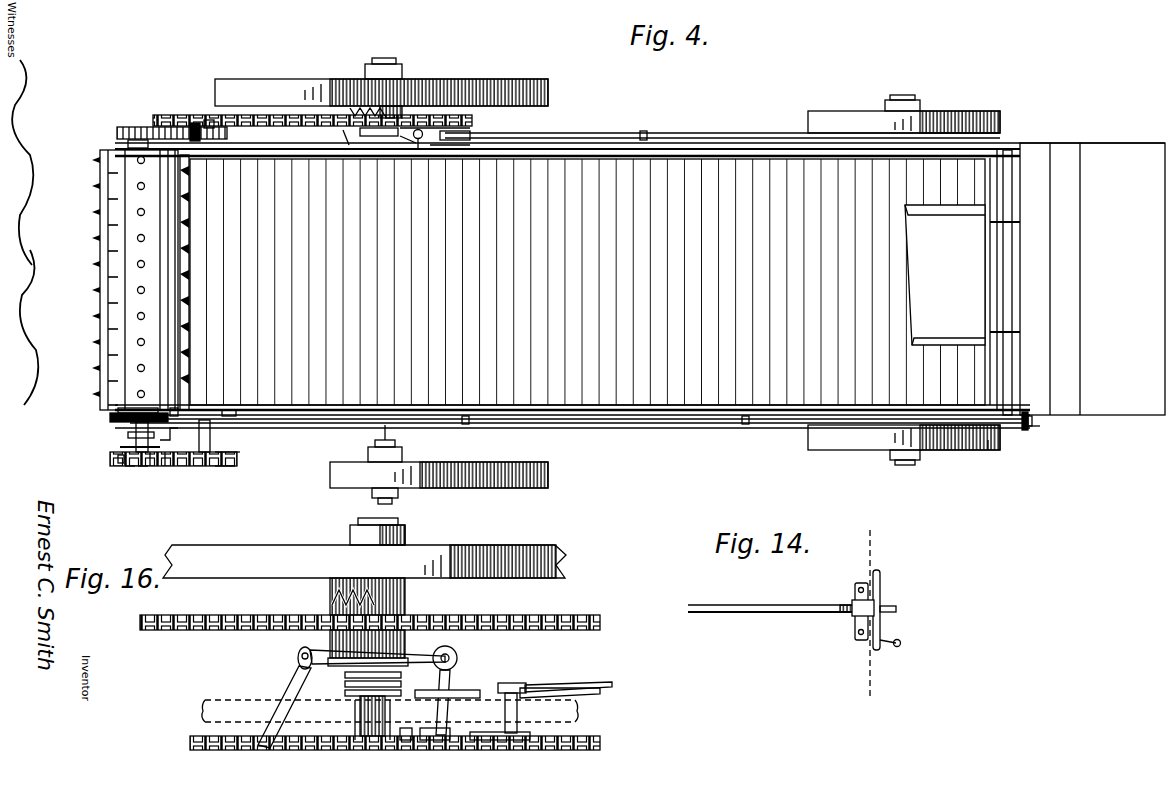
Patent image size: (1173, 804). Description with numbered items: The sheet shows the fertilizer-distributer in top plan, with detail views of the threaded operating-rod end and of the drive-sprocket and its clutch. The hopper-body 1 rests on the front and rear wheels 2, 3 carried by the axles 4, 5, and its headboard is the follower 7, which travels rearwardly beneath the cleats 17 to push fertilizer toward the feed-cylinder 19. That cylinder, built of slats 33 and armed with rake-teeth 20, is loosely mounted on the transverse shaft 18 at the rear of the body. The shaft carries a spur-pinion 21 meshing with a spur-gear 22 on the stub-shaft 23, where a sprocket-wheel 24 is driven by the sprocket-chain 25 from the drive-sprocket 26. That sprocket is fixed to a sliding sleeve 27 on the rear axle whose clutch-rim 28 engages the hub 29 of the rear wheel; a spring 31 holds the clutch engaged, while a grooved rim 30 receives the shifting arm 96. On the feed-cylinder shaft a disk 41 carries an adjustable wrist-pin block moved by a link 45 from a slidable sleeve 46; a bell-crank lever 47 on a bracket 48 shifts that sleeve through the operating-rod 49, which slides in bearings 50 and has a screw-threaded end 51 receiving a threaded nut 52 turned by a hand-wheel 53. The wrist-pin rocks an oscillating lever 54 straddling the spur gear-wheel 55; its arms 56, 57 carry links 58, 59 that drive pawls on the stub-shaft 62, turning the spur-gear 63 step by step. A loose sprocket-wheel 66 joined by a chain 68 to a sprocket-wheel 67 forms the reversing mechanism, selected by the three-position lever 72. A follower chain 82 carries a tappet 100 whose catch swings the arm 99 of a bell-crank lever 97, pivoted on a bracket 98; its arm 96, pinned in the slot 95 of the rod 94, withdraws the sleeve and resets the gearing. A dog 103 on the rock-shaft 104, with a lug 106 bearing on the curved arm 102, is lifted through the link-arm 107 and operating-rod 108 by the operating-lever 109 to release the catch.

In FIG. 4, the hopper-body 1 is at (652, 143).
In FIG. 4, the front wheel 2 is at (960, 443).
In FIG. 4, the rear wheel 3 is at (478, 476).
In FIG. 16, the rear wheel 3 is at (425, 545).
In FIG. 4, the front axle 4 is at (902, 465).
In FIG. 4, the rear axle 5 is at (385, 62).
In FIG. 4, the follower 7 is at (1010, 283).
In FIG. 4, the cleats 17 is at (705, 158).
In FIG. 4, the transverse shaft 18 is at (118, 425).
In FIG. 4, the feed-cylinder 19 is at (100, 261).
In FIG. 4, the rake-teeth 20 is at (106, 305).
In FIG. 4, the spur-pinion 21 is at (137, 140).
In FIG. 4, the spur-gear 22 is at (158, 127).
In FIG. 4, the stub-shaft 23 is at (194, 123).
In FIG. 4, the sprocket-wheel 24 is at (210, 120).
In FIG. 4, the sprocket-chain 25 is at (290, 120).
In FIG. 16, the drive-sprocket 26 is at (205, 625).
In FIG. 16, the sliding sleeve 27 is at (405, 638).
In FIG. 4, the clutch-rim 28 is at (398, 118).
In FIG. 16, the clutch-rim 28 is at (330, 612).
In FIG. 4, the hub 29 is at (352, 108).
In FIG. 16, the hub 29 is at (347, 592).
In FIG. 4, the grooved rim 30 is at (428, 128).
In FIG. 16, the grooved rim 30 is at (345, 678).
In FIG. 16, the spring 31 is at (355, 700).
In FIG. 4, the slats 33 is at (130, 212).
In FIG. 4, the disk 41 is at (140, 448).
In FIG. 4, the link 45 is at (172, 467).
In FIG. 4, the sleeve 46 is at (135, 435).
In FIG. 4, the bell-crank lever 47 is at (150, 445).
In FIG. 4, the bracket 48 is at (179, 435).
In FIG. 4, the operating-rod 49 is at (652, 424).
In FIG. 14, the operating-rod 49 is at (732, 605).
In FIG. 4, the bearings 50 is at (465, 424).
In FIG. 4, the screw-threaded end 51 is at (1032, 427).
In FIG. 14, the screw-threaded end 51 is at (897, 608).
In FIG. 14, the threaded nut 52 is at (855, 600).
In FIG. 4, the hand-wheel 53 is at (1025, 430).
In FIG. 14, the hand-wheel 53 is at (895, 615).
In FIG. 4, the oscillating lever 54 is at (156, 466).
In FIG. 4, the spur gear-wheel 55 is at (127, 466).
In FIG. 4, the arm 56 is at (125, 458).
In FIG. 4, the arm 57 is at (142, 466).
In FIG. 4, the link 58 is at (168, 467).
In FIG. 4, the link 59 is at (216, 455).
In FIG. 4, the stub-shaft 62 is at (212, 430).
In FIG. 4, the spur-gear 63 is at (218, 467).
In FIG. 4, the sprocket-wheel 66 is at (118, 418).
In FIG. 4, the sprocket-wheel 67 is at (230, 412).
In FIG. 4, the chain 68 is at (180, 412).
In FIG. 4, the lever 72 is at (990, 450).
In FIG. 16, the chain 82 is at (600, 742).
In FIG. 16, the rod 94 is at (280, 700).
In FIG. 4, the slot 95 is at (348, 138).
In FIG. 16, the slot 95 is at (298, 658).
In FIG. 4, the arm 96 is at (372, 138).
In FIG. 16, the arm 96 is at (318, 652).
In FIG. 4, the bell-crank lever 97 is at (406, 140).
In FIG. 4, the bracket 98 is at (428, 140).
In FIG. 16, the bracket 98 is at (450, 690).
In FIG. 4, the arm 99 is at (420, 145).
In FIG. 16, the arm 99 is at (445, 728).
In FIG. 16, the tappet 100 is at (420, 718).
In FIG. 16, the curved arm 102 is at (540, 734).
In FIG. 16, the dog 103 is at (520, 710).
In FIG. 4, the rock-shaft 104 is at (470, 150).
In FIG. 16, the lug 106 is at (520, 698).
In FIG. 4, the link-arm 107 is at (456, 135).
In FIG. 16, the link-arm 107 is at (510, 683).
In FIG. 4, the operating-rod 108 is at (595, 127).
In FIG. 16, the operating-rod 108 is at (612, 682).
In FIG. 4, the operating-lever 109 is at (932, 131).